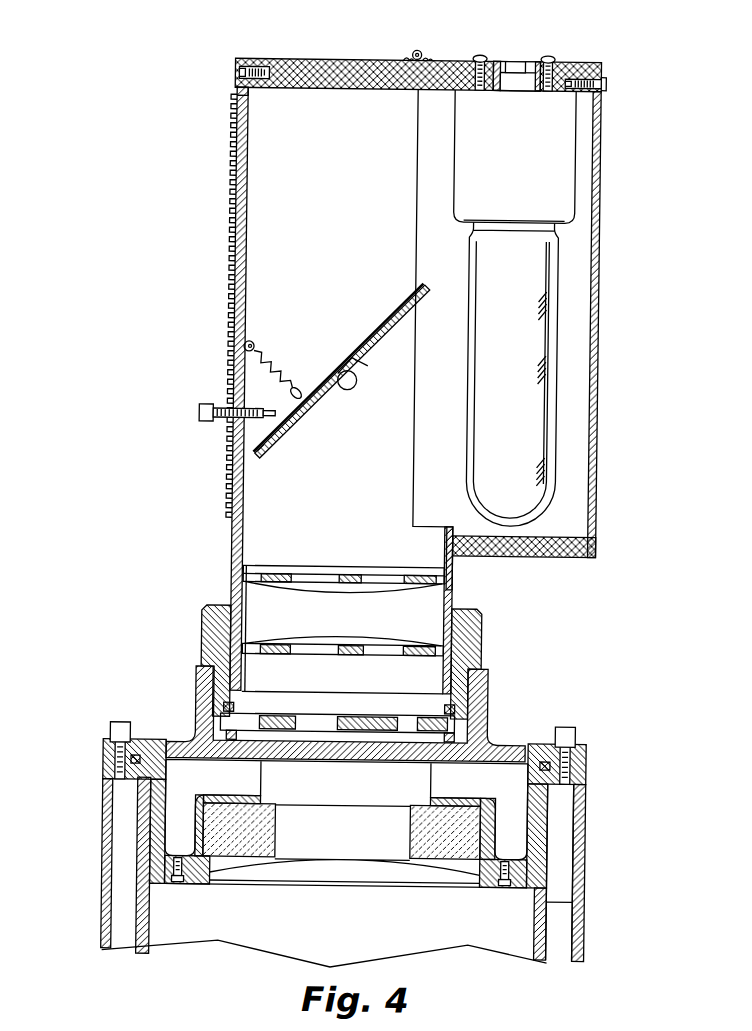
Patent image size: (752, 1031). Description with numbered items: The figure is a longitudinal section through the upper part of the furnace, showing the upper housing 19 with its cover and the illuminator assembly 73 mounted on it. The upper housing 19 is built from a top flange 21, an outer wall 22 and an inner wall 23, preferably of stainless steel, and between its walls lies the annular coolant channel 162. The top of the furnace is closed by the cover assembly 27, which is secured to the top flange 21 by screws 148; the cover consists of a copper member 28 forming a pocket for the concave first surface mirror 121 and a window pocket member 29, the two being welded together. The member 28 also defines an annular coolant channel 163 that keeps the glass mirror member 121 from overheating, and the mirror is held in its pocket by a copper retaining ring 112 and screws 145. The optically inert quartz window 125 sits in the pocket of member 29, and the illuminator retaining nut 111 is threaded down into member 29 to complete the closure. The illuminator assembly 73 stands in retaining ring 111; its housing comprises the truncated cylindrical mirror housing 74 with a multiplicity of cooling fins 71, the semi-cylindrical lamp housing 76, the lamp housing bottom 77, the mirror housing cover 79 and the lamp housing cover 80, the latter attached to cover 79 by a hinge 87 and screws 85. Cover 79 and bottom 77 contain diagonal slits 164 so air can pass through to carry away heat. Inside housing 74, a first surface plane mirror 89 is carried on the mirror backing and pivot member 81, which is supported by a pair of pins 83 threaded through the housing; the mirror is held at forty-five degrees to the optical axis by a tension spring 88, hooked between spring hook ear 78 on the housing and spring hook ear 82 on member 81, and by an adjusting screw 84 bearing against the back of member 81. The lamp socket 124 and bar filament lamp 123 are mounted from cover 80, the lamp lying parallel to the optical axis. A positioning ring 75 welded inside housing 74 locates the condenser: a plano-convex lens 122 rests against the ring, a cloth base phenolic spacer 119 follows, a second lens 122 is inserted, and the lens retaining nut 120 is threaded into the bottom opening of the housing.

The upper housing 19 is at (106, 830).
The top flange 21 is at (108, 766).
The outer wall 22 is at (589, 828).
The inner wall 23 is at (551, 878).
The cover assembly 27 is at (510, 744).
The member 28 is at (113, 732).
The window pocket member 29 is at (492, 690).
The fins 71 is at (228, 134).
The illuminator assembly 73 is at (232, 270).
The mirror housing 74 is at (232, 91).
The positioning ring 75 is at (280, 567).
The lamp housing 76 is at (596, 208).
The lamp housing bottom 77 is at (578, 555).
The spring hook ear 78 is at (250, 344).
The mirror housing cover 79 is at (258, 60).
The lamp housing cover 80 is at (474, 54).
The mirror backing and pivot member 81 is at (354, 356).
The spring hook ear 82 is at (296, 388).
The pins 83 is at (352, 388).
The adjusting screw 84 is at (204, 405).
The screws 85 is at (601, 81).
The hinge 87 is at (410, 50).
The tension spring 88 is at (277, 370).
The first surface plane mirror 89 is at (285, 430).
The illuminator retaining nut 111 is at (484, 628).
The copper retaining ring 112 is at (551, 900).
The spacer 119 is at (300, 640).
The lens retaining nut 120 is at (300, 650).
The concave first surface mirror 121 is at (264, 872).
The plano-convex lens 122 is at (300, 590).
The lamp 123 is at (560, 313).
The lamp socket 124 is at (571, 148).
The quartz window 125 is at (240, 716).
The screws 145 is at (182, 886).
The screws 148 is at (570, 725).
The annular coolant channel 162 is at (567, 805).
The annular coolant channel 163 is at (147, 802).
The diagonal slits 164 is at (300, 60).